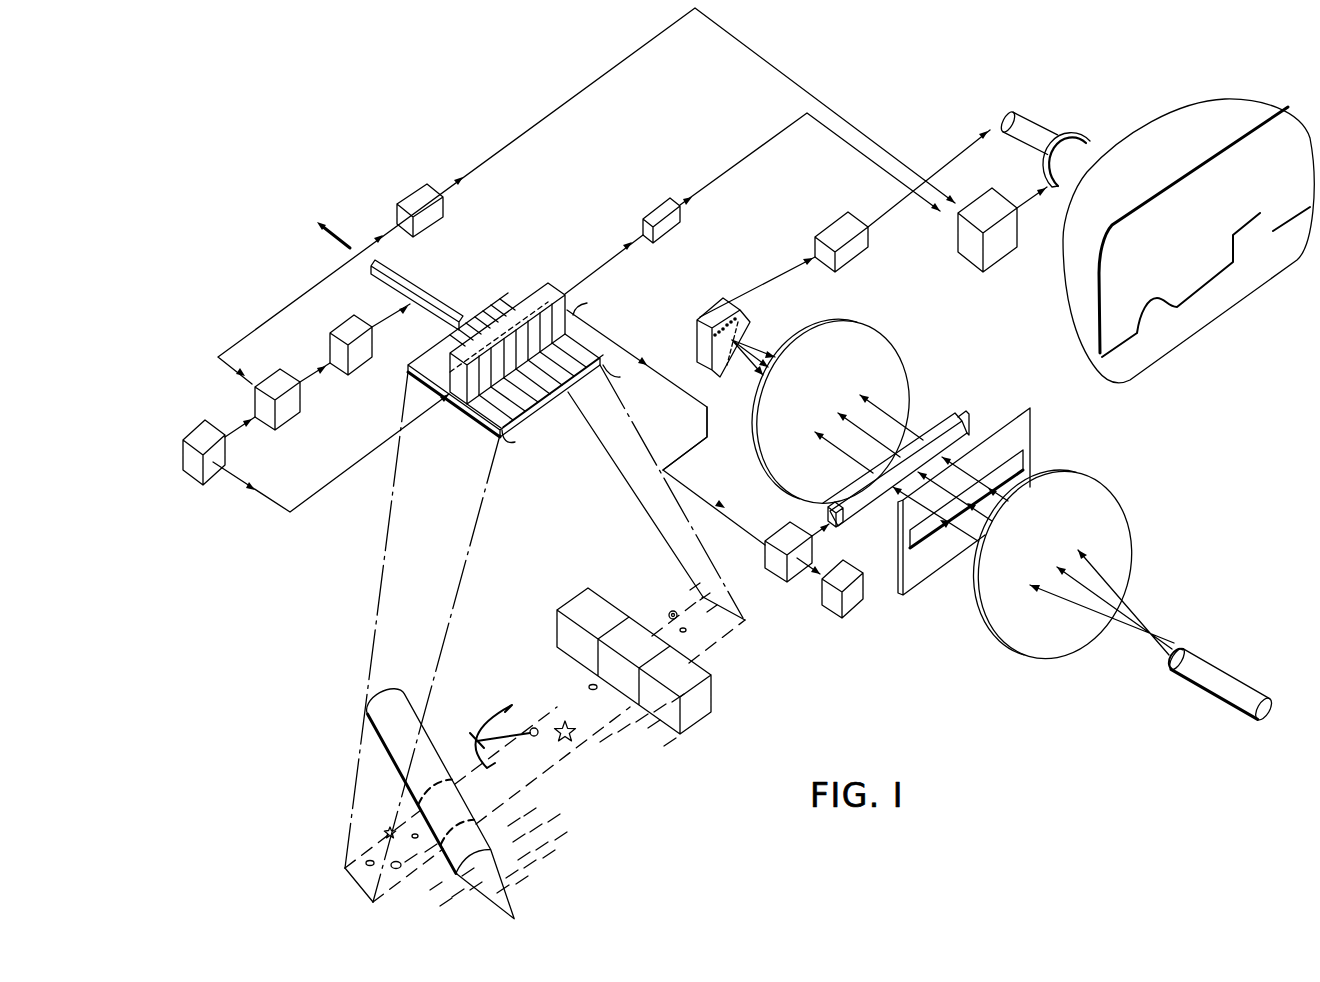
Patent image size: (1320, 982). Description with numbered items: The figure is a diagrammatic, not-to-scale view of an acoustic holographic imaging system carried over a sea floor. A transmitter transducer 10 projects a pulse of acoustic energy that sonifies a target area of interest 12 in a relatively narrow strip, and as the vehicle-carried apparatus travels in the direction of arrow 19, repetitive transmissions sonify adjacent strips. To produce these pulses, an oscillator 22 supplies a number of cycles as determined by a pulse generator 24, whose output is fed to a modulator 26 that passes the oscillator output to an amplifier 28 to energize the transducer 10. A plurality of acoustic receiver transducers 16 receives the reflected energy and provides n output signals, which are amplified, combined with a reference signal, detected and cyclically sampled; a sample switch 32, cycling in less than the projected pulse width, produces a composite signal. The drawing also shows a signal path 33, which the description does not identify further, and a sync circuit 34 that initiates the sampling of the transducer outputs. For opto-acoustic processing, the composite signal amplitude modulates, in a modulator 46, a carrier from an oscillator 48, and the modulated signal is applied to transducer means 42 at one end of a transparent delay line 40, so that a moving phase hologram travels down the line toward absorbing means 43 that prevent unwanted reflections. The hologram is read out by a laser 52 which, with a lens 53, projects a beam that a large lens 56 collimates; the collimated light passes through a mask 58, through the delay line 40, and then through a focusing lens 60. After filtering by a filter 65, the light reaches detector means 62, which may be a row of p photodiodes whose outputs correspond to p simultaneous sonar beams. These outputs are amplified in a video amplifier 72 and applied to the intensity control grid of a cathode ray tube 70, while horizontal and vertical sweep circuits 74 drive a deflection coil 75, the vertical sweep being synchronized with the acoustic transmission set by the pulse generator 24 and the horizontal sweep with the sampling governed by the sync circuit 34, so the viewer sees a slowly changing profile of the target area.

The transmitter transducer 10 is at (418, 290).
The target area of interest 12 is at (583, 707).
The acoustic receiver transducers 16 is at (527, 361).
The direction of travel arrow 19 is at (328, 240).
The oscillator 22 is at (204, 424).
The pulse generator 24 is at (437, 219).
The modulator 26 is at (279, 370).
The amplifier 28 is at (343, 327).
The sample switch 32 is at (546, 288).
The signal path 33 is at (670, 472).
The sync circuit 34 is at (671, 199).
The delay line 40 is at (943, 427).
The transducer means 42 is at (827, 508).
The absorbing means 43 is at (963, 413).
The modulator 46 is at (773, 578).
The oscillator 48 is at (830, 608).
The laser 52 is at (1152, 636).
The lens 53 is at (1183, 650).
The large lens 56 is at (1093, 483).
The mask 58 is at (1032, 453).
The focusing lens 60 is at (840, 323).
The detector means 62 is at (714, 351).
The filter 65 is at (730, 372).
The cathode ray tube 70 is at (1110, 373).
The video amplifier 72 is at (840, 222).
The horizontal and vertical sweep circuits 74 is at (958, 240).
The deflection coil 75 is at (1068, 132).